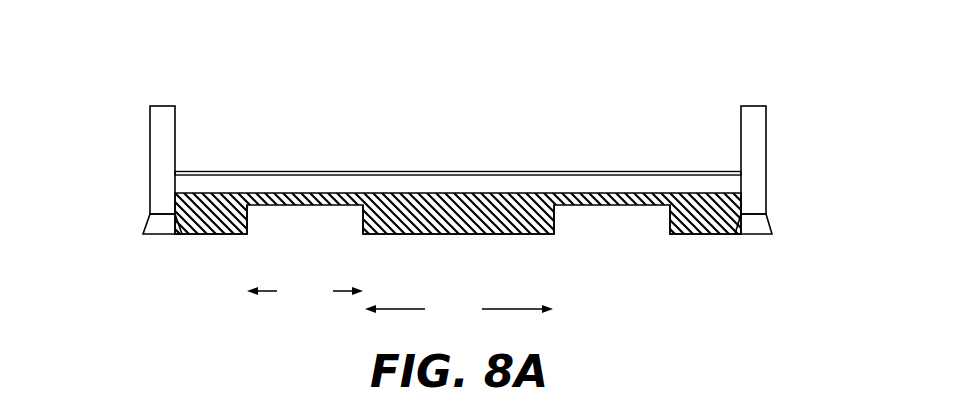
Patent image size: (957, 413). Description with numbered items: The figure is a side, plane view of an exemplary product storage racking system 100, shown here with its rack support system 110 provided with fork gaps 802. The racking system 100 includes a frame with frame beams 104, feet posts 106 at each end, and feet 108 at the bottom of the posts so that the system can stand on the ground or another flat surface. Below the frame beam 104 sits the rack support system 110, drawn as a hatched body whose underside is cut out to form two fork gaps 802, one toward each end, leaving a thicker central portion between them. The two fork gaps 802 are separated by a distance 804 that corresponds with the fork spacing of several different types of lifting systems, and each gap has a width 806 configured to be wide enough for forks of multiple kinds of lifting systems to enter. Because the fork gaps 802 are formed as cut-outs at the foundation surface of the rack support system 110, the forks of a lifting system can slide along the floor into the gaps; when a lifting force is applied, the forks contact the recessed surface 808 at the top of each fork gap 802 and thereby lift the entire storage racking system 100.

The product storage racking system 100 is at (112, 84).
The frame beam 104 is at (513, 181).
The feet post 106 is at (766, 117).
The foot 108 is at (772, 230).
The rack support system 110 is at (402, 203).
The fork gap 802 is at (267, 228).
The distance 804 is at (459, 310).
The width 806 is at (305, 291).
The recessed surface 808 is at (600, 222).